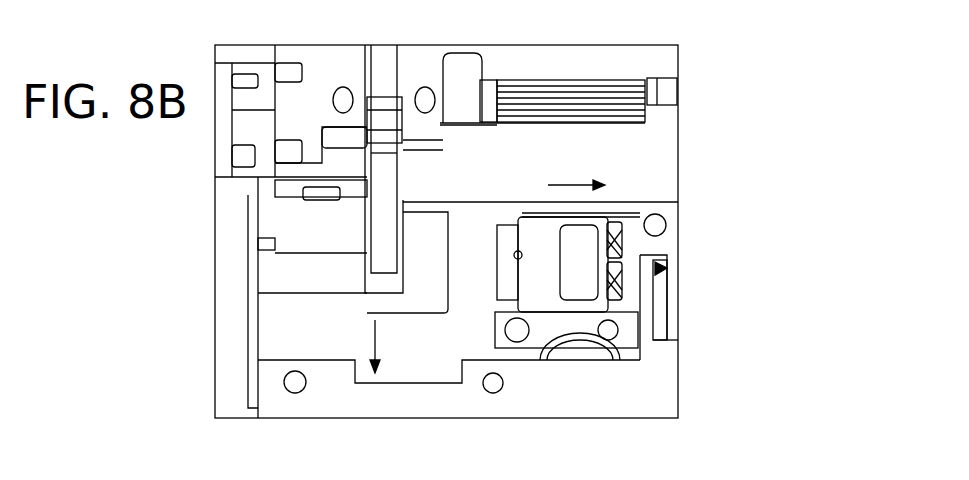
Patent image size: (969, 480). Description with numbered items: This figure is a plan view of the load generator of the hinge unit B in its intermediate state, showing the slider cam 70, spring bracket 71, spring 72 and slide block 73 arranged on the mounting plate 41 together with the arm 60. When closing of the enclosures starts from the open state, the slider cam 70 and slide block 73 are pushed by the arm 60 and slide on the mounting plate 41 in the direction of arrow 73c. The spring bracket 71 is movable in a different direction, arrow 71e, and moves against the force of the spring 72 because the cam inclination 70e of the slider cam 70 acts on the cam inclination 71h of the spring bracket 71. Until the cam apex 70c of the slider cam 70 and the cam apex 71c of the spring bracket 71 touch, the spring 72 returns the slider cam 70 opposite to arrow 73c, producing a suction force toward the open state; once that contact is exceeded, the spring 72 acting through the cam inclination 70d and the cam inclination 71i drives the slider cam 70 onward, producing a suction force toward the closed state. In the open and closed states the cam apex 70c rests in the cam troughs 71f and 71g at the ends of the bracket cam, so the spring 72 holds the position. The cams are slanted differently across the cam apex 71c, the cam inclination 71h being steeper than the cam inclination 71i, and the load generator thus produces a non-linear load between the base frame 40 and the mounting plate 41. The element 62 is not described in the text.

The base frame 40 is at (677, 68).
The mounting plate 41 is at (323, 390).
The arm 60 is at (455, 232).
The coil spring 62 is at (643, 110).
The slider cam 70 is at (380, 150).
The cam apex 70c is at (470, 220).
The cam inclination 70d is at (452, 158).
The cam inclination 70e is at (472, 268).
The spring bracket 71 is at (582, 236).
The cam apex 71c is at (452, 158).
The arrow 71e is at (565, 185).
The cam trough 71f is at (543, 214).
The cam trough 71g is at (495, 300).
The cam inclination 71h is at (519, 223).
The cam inclination 71i is at (518, 300).
The spring 72 is at (615, 232).
The slide block 73 is at (268, 275).
The arrow 73c is at (370, 343).
The hinge unit B is at (712, 68).